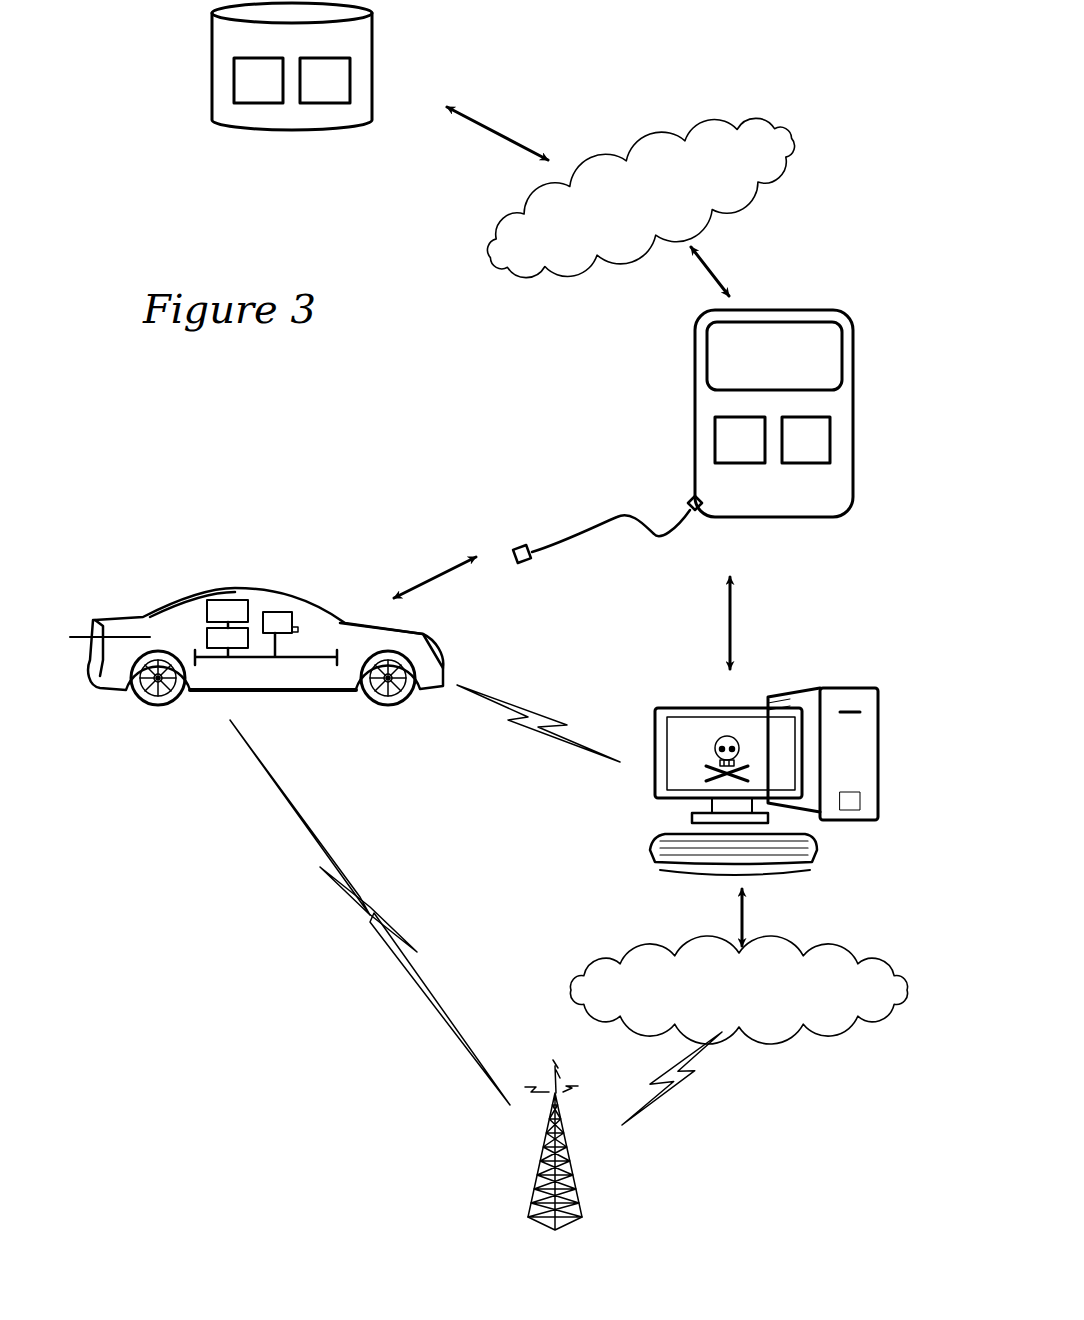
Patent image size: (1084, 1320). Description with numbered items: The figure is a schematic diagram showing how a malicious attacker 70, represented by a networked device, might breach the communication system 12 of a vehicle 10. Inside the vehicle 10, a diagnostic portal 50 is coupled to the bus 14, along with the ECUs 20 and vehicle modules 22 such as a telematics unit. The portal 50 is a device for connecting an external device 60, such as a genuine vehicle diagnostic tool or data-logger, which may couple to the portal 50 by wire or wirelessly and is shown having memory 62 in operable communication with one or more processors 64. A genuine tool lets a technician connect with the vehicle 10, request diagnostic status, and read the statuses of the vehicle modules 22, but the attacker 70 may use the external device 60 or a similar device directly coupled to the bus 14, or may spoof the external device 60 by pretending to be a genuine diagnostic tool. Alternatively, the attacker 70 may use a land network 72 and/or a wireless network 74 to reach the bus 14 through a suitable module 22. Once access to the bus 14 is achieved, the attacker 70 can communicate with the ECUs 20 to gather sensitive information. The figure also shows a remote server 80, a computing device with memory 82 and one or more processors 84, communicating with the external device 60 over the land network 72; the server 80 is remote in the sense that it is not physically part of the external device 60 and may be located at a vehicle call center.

The vehicle 10 is at (235, 556).
The communication system 12 is at (150, 637).
The bus 14 is at (298, 658).
The ECUs 20 is at (207, 638).
The vehicle modules 22 is at (207, 607).
The diagnostic portal 50 is at (282, 612).
The external device 60 is at (853, 385).
The memory 62 is at (740, 440).
The processors 64 is at (806, 440).
The malicious attacker 70 is at (850, 684).
The land network 72 is at (697, 581).
The wireless network 74 is at (596, 1172).
The remote server 80 is at (372, 55).
The memory 82 is at (258, 80).
The processors 84 is at (325, 80).